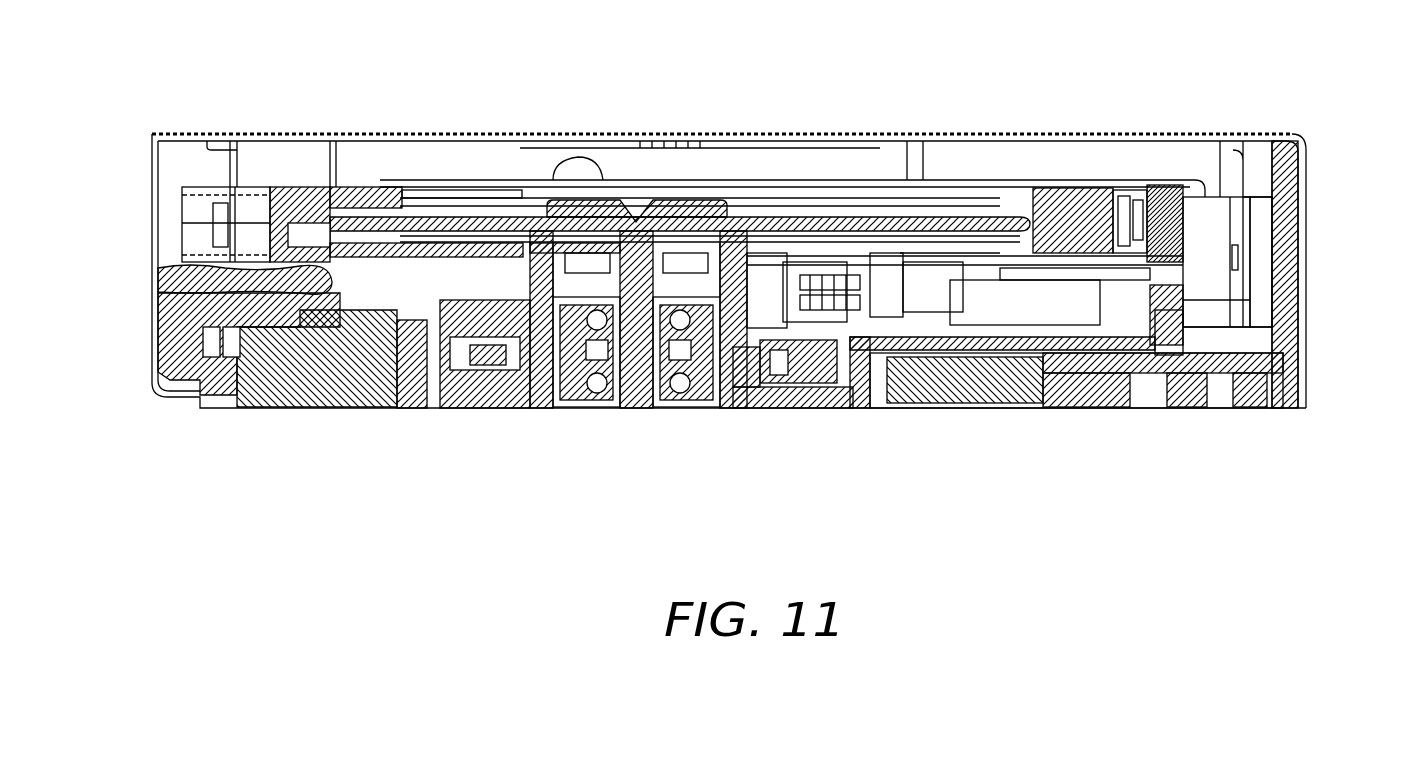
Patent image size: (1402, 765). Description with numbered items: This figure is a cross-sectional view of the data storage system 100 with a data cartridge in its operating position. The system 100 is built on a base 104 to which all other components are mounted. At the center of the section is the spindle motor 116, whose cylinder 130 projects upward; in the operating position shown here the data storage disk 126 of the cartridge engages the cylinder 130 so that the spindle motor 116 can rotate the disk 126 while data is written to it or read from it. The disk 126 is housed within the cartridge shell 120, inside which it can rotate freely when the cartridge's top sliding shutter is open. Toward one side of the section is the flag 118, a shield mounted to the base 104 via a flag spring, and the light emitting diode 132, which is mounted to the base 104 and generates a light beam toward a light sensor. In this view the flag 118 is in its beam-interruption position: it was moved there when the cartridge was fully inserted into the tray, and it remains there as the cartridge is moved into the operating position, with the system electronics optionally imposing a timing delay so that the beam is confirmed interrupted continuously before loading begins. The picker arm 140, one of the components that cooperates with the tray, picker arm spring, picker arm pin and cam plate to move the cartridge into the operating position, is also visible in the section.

The system 100 is at (852, 48).
The base 104 is at (160, 346).
The spindle motor 116 is at (840, 478).
The flag 118 is at (1232, 312).
The cartridge shell 120 is at (354, 195).
The data storage disk 126 is at (803, 225).
The cylinder 130 is at (735, 395).
The light emitting diode 132 is at (1257, 262).
The picker arm 140 is at (1160, 200).